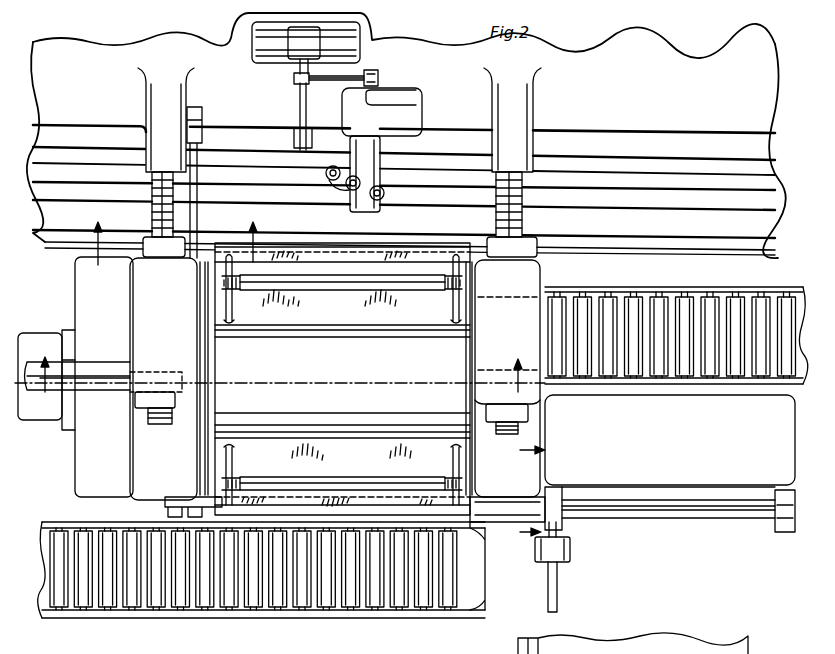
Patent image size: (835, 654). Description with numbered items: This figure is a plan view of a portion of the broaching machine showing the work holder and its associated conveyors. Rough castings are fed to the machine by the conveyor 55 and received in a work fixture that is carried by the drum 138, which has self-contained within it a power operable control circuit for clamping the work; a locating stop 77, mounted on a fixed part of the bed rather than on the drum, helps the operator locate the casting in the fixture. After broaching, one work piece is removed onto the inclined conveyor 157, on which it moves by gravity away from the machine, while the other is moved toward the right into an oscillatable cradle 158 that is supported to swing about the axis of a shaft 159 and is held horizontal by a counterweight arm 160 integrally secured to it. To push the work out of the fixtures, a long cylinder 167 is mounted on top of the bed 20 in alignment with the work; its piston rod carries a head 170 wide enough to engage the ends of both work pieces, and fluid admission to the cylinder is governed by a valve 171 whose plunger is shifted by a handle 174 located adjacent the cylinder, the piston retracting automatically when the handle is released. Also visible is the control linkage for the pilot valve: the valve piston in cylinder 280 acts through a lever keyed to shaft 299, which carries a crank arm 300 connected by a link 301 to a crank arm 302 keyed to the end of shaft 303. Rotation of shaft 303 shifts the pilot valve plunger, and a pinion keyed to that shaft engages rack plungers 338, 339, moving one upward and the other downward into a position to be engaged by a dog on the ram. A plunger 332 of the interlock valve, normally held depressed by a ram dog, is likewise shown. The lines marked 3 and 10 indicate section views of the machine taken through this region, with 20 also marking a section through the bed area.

The section line 3- 3 is at (277, 367).
The section line 10- 10 is at (171, 235).
The bed 20 is at (522, 498).
The conveyor 55 is at (372, 606).
The locating stop 77 is at (166, 501).
The drum 138 is at (245, 462).
The inclined conveyor 157 is at (704, 302).
The oscillatable cradle 158 is at (722, 472).
The shaft 159 is at (652, 505).
The counterweight arm 160 is at (558, 596).
The long cylinder 167 is at (136, 370).
The head 170 is at (198, 335).
The valve 171 is at (122, 390).
The handle 174 is at (134, 402).
The cylinder 280 is at (256, 42).
The shaft 299 is at (300, 100).
The crank arm 300 is at (293, 79).
The link 301 is at (345, 76).
The crank arm 302 is at (380, 78).
The shaft 303 is at (422, 100).
The plunger 332 is at (330, 168).
The rack plunger 338 is at (345, 208).
The rack plunger 339 is at (384, 200).